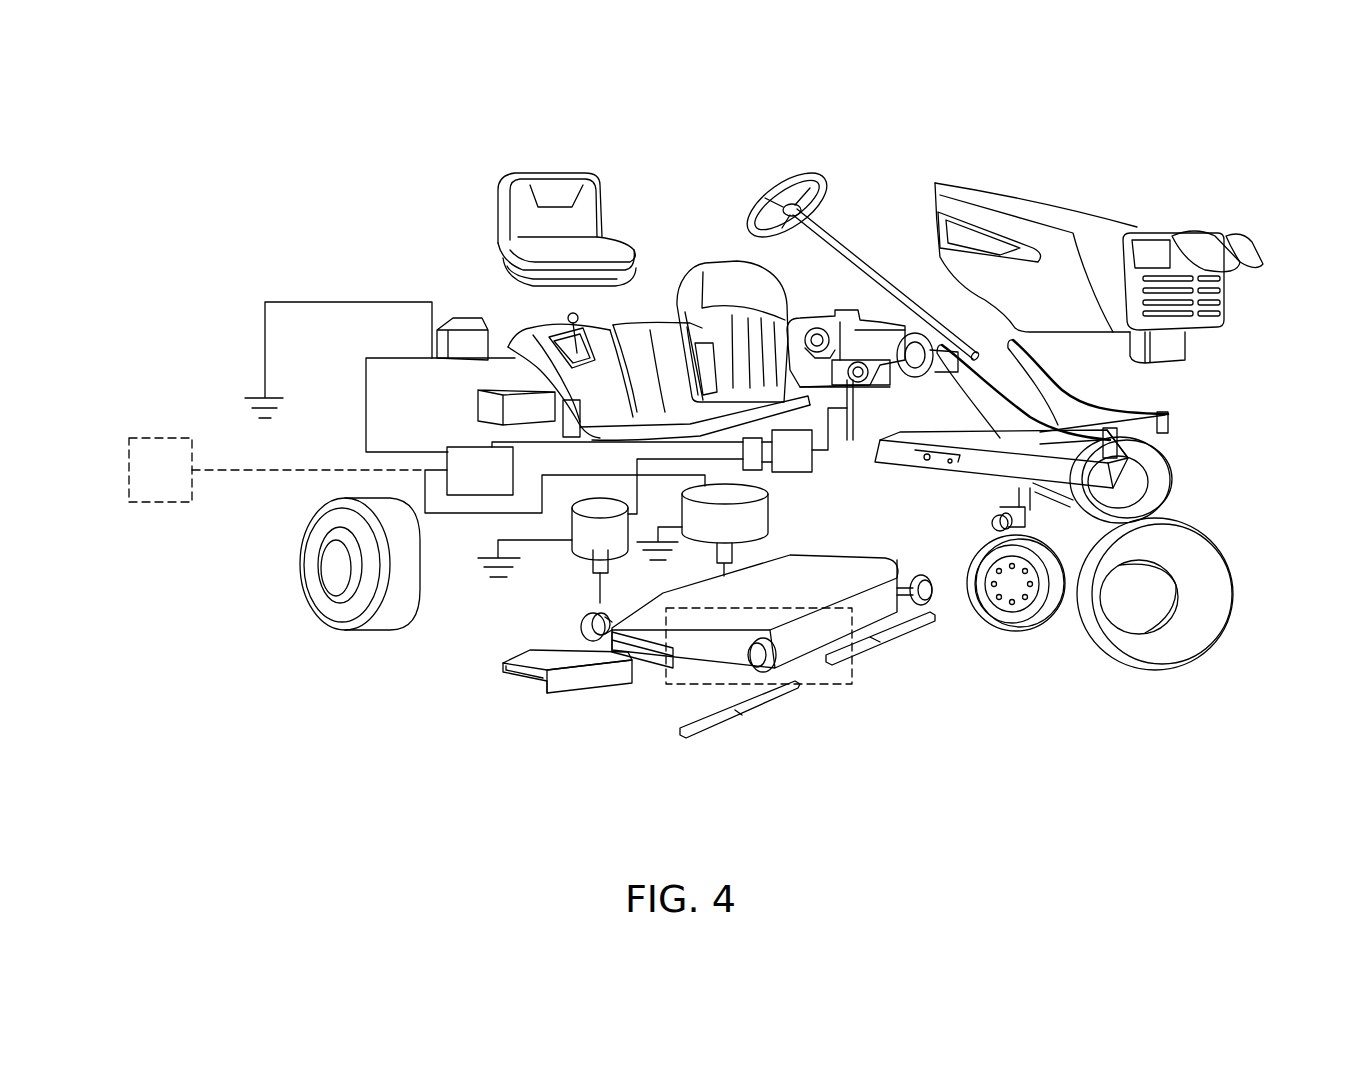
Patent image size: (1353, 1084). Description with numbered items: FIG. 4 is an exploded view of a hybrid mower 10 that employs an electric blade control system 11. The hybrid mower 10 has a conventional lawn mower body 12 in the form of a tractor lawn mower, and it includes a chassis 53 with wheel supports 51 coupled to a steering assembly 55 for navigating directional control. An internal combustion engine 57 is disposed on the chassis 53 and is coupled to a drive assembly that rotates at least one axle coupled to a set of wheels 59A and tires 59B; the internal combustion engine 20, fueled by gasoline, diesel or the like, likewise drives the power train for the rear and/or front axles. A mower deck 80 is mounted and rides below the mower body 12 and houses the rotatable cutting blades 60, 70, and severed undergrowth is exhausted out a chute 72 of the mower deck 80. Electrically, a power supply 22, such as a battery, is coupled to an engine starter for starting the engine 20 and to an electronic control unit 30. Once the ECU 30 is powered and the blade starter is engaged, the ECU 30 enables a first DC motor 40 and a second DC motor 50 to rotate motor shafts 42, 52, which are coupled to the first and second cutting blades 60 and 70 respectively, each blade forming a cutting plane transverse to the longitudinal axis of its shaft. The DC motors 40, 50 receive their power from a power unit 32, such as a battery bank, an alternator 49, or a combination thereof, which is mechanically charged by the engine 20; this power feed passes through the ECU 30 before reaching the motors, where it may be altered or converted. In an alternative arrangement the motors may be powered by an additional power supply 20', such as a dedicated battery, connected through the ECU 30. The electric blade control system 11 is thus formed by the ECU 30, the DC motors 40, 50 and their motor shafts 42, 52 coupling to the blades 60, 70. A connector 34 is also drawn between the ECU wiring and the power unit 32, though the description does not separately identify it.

The hybrid mower 10 is at (1234, 150).
The electric blade control system 11 is at (468, 630).
The lawn mower body 12 is at (1212, 358).
The internal combustion engine 20 is at (861, 397).
The additional power supply 20' is at (271, 438).
The power supply 22 is at (463, 318).
The electronic control unit 30 is at (462, 453).
The power unit 32 is at (805, 460).
The connector 34 is at (758, 470).
The first DC motor 40 is at (582, 548).
The motor shaft 42 is at (602, 601).
The alternator 49 is at (945, 374).
The second DC motor 50 is at (698, 515).
The wheel supports 51 is at (992, 522).
The motor shaft 52 is at (722, 567).
The chassis 53 is at (1125, 487).
The steering assembly 55 is at (828, 155).
The internal combustion engine 57 is at (813, 305).
The wheels 59A is at (1000, 630).
The tires 59B is at (338, 613).
The first cutting blade 60 is at (727, 716).
The second cutting blade 70 is at (880, 657).
The chute 72 is at (572, 686).
The mower deck 80 is at (693, 661).